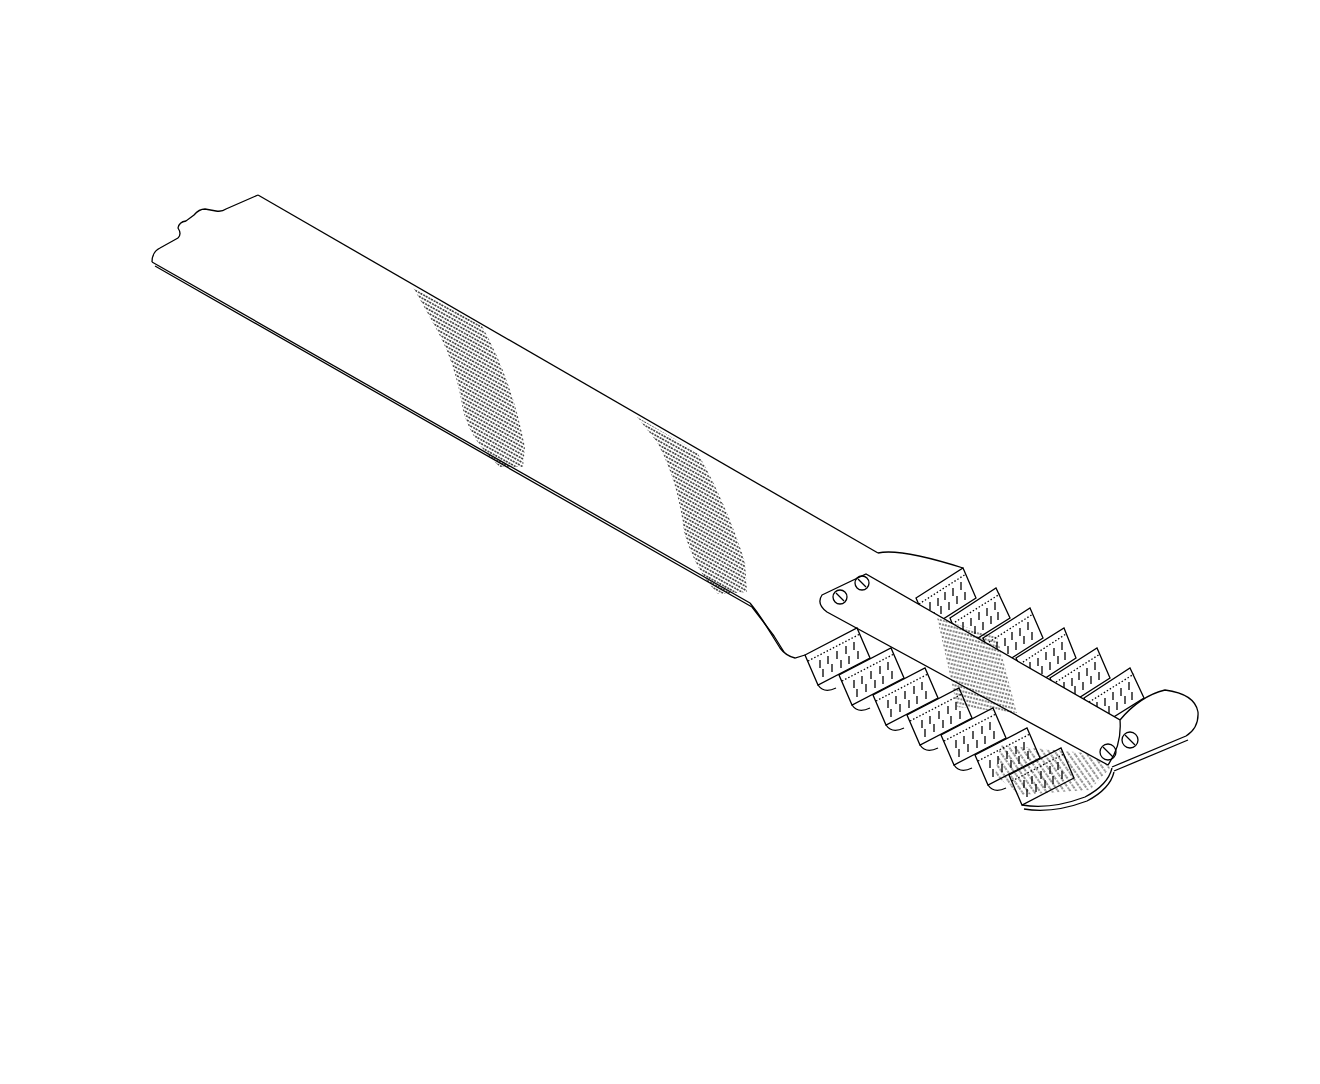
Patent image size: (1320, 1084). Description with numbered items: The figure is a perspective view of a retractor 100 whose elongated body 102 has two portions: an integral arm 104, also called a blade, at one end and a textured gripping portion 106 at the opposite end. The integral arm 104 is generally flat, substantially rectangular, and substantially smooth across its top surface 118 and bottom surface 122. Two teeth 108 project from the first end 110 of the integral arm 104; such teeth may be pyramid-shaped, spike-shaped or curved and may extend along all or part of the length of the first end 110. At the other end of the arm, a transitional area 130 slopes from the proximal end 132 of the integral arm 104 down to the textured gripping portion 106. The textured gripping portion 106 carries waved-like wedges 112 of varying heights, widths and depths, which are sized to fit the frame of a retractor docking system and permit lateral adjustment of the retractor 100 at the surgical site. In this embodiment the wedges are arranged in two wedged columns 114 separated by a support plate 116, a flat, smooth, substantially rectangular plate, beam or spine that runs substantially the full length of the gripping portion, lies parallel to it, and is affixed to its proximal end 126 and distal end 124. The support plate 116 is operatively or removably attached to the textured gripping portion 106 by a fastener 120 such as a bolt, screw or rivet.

The retractor 100 is at (1236, 90).
The elongated body 102 is at (1240, 583).
The integral arm 104 is at (497, 458).
The textured gripping portion 106 is at (777, 690).
The teeth 108 is at (190, 220).
The first end 110 is at (125, 273).
The wedges 112 is at (1007, 590).
The wedged columns 114 is at (1209, 742).
The support plate 116 is at (1017, 670).
The top surface 118 is at (372, 347).
The fastener 120 is at (1132, 738).
The bottom surface 122 is at (693, 600).
The distal end 124 is at (1135, 757).
The proximal end 126 is at (860, 578).
The transitional area 130 is at (770, 657).
The proximal end 132 is at (897, 562).